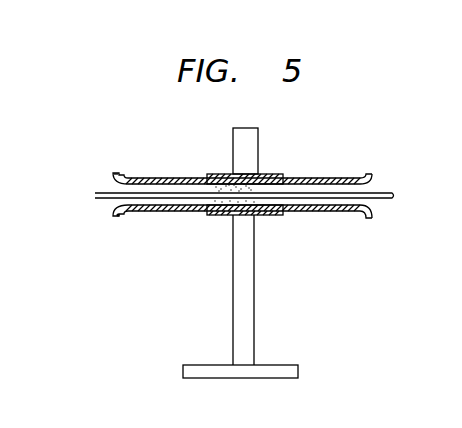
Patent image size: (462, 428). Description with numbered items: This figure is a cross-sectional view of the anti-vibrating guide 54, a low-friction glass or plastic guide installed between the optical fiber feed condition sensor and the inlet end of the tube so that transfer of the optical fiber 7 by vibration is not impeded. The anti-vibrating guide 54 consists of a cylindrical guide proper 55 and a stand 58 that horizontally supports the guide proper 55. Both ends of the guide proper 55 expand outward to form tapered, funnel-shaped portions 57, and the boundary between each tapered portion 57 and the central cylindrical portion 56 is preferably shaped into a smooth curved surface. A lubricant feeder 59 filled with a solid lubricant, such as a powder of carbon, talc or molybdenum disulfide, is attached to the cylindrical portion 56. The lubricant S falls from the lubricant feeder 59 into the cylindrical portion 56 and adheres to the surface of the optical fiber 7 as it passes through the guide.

The optical fiber 7 is at (381, 195).
The anti-vibrating guide 54 is at (290, 177).
The guide proper 55 is at (324, 178).
The cylindrical portion 56 is at (145, 212).
The tapered portion 57 is at (116, 212).
The stand 58 is at (254, 282).
The lubricant feeder 59 is at (233, 147).
The lubricant S is at (230, 216).